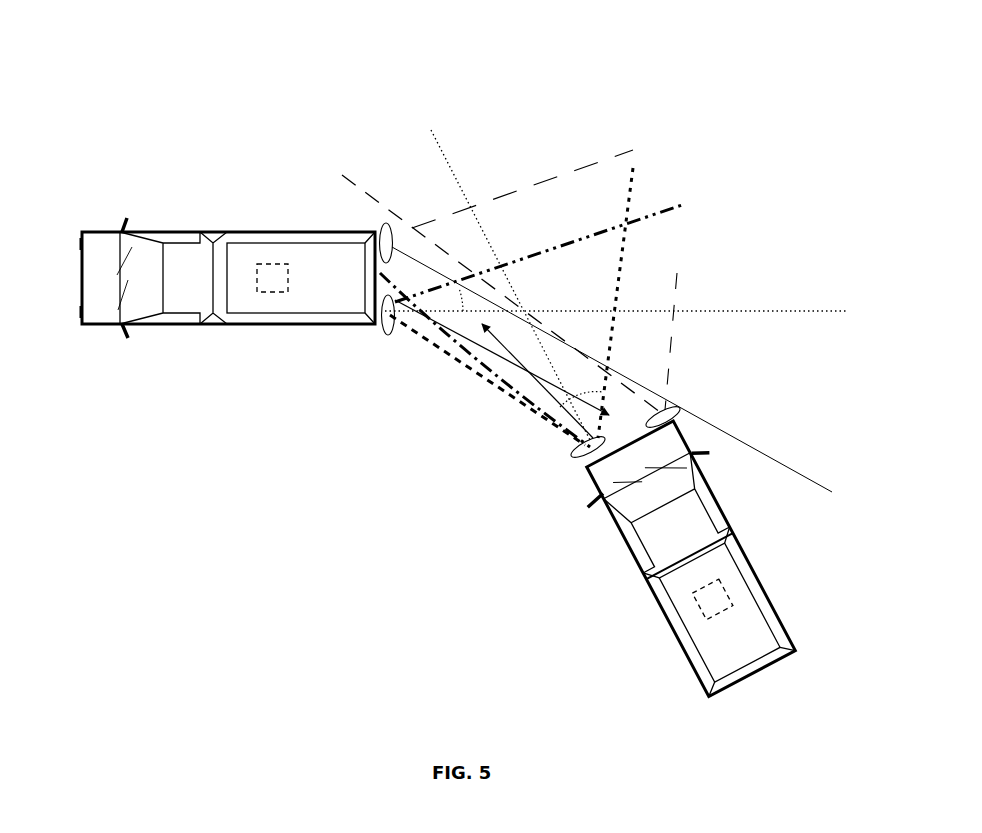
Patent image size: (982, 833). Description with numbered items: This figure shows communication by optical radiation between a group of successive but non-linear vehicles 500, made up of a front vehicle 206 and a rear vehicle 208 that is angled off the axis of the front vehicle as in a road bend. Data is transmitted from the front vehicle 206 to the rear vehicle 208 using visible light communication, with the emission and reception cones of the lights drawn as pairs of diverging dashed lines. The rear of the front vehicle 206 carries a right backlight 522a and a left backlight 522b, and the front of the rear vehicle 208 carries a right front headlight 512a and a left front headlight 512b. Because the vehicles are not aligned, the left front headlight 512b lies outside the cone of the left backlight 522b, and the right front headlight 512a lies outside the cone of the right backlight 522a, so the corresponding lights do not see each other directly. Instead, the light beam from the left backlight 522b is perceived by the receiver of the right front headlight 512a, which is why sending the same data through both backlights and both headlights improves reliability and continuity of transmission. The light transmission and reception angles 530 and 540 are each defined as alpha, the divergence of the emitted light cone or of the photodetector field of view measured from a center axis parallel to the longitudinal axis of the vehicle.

The group of successive but non-linear vehicles 500 is at (450, 73).
The front vehicle 206 is at (238, 340).
The rear vehicle 208 is at (641, 603).
The right backlight 522a is at (378, 228).
The left backlight 522b is at (388, 334).
The right front headlight 512a is at (683, 409).
The left front headlight 512b is at (574, 447).
The light transmission and reception angle 530 is at (541, 330).
The light transmission and reception angle 540 is at (464, 290).